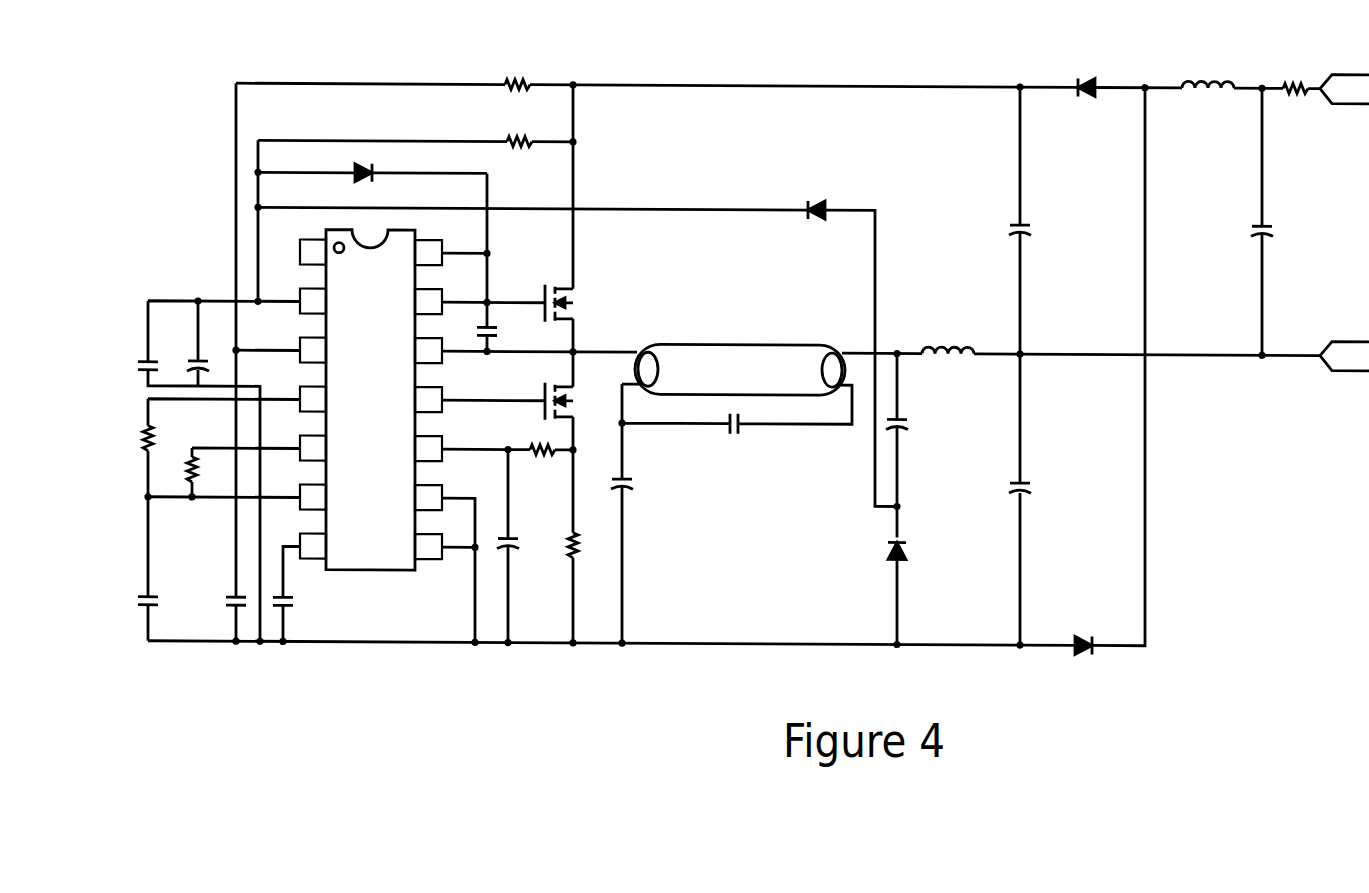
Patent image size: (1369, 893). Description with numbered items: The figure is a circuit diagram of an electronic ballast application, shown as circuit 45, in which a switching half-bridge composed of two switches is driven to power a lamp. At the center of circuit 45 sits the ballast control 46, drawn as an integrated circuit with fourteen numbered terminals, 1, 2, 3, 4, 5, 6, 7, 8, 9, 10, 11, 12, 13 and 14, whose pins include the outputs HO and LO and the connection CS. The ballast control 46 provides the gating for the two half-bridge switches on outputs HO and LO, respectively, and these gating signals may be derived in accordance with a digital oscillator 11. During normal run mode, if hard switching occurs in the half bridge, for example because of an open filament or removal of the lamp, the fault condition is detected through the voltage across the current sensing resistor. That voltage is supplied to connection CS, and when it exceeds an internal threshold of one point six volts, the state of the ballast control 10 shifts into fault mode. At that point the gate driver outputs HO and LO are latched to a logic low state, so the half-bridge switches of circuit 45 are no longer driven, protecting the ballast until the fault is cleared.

The circuit 45 is at (729, 331).
The ballast control 46 is at (374, 395).
The IC pin 1 (NC) 1 is at (312, 242).
The IC pin 2 (VCC) 2 is at (308, 291).
The IC pin 3 (VDC) 3 is at (307, 340).
The IC pin 4 (RT) 4 is at (313, 390).
The IC pin 5 (RPH) 5 is at (308, 438).
The IC pin 6 (CT) 6 is at (313, 488).
The IC pin 7 (CPH) 7 is at (308, 536).
The IC pin 8 (COM) 8 is at (437, 537).
The IC pin 9 (SD) 9 is at (429, 488).
The ballast control 10 is at (429, 439).
The digital oscillator 11 is at (428, 390).
The IC pin 12 (VS) 12 is at (428, 341).
The IC pin 13 (HO) 13 is at (430, 292).
The IC pin 14 (VB) 14 is at (429, 243).